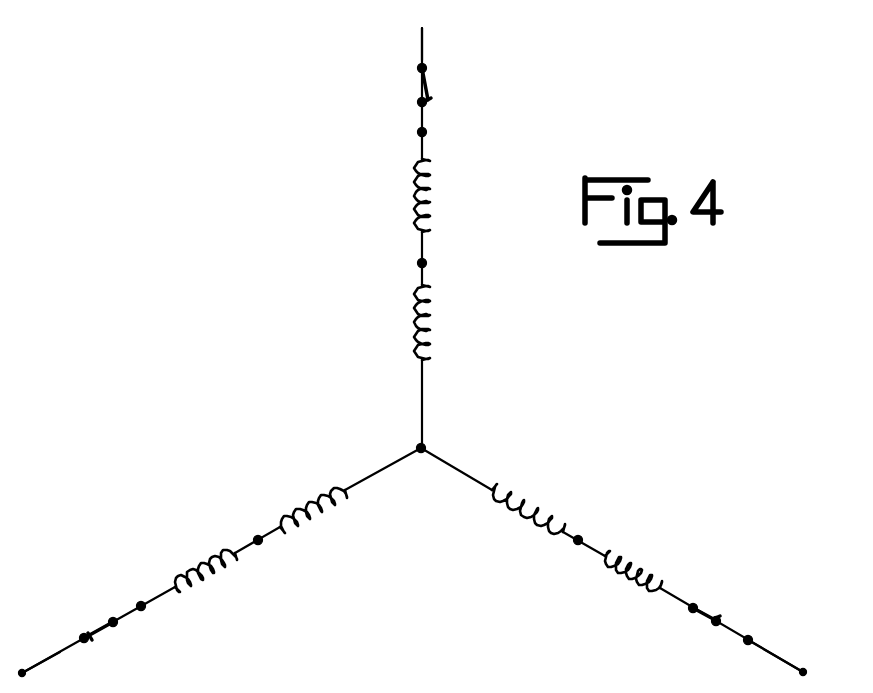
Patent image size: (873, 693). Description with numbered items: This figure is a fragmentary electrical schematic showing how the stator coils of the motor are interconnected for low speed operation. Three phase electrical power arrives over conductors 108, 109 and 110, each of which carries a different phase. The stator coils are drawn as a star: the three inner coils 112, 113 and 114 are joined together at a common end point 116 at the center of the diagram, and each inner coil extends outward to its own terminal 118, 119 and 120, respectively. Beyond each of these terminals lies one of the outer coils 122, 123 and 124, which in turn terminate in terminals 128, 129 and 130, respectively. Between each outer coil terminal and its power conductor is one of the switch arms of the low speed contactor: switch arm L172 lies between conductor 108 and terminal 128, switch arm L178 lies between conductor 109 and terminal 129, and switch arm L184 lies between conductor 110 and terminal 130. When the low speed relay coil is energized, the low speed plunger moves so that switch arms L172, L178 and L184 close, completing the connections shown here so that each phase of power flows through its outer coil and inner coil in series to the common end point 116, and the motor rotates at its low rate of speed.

The conductor 108 is at (425, 53).
The switch arm L172 is at (425, 88).
The terminal 128 is at (425, 132).
The outer coil 122 is at (430, 196).
The terminal 118 is at (425, 262).
The inner coil 112 is at (430, 334).
The common end point 116 is at (424, 446).
The inner coil 114 is at (320, 499).
The terminal 120 is at (259, 537).
The outer coil 124 is at (212, 561).
The terminal 130 is at (143, 605).
The switch arm L184 is at (112, 622).
The conductor 110 is at (60, 650).
The inner coil 113 is at (527, 503).
The terminal 119 is at (580, 538).
The outer coil 123 is at (638, 564).
The terminal 129 is at (694, 608).
The switch arm L178 is at (734, 632).
The conductor 109 is at (774, 654).